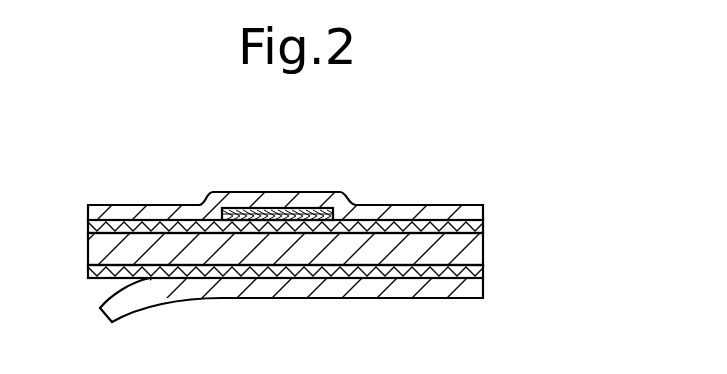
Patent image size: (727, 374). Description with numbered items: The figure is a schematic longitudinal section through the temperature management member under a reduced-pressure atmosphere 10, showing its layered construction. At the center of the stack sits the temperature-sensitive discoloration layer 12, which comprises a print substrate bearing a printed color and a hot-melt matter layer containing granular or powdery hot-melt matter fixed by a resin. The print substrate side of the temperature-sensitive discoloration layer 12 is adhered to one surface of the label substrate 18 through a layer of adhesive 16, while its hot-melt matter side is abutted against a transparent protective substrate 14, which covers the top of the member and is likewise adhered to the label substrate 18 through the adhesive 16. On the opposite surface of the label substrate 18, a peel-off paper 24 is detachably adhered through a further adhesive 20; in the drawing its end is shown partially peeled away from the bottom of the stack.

The temperature management member under reduced-pressure atmosphere 10 is at (478, 132).
The temperature-sensitive discoloration layer 12 is at (325, 207).
The protective substrate 14 is at (479, 212).
The adhesive 16 is at (88, 229).
The label substrate 18 is at (479, 250).
The adhesive 20 is at (88, 273).
The peel-off paper 24 is at (460, 289).